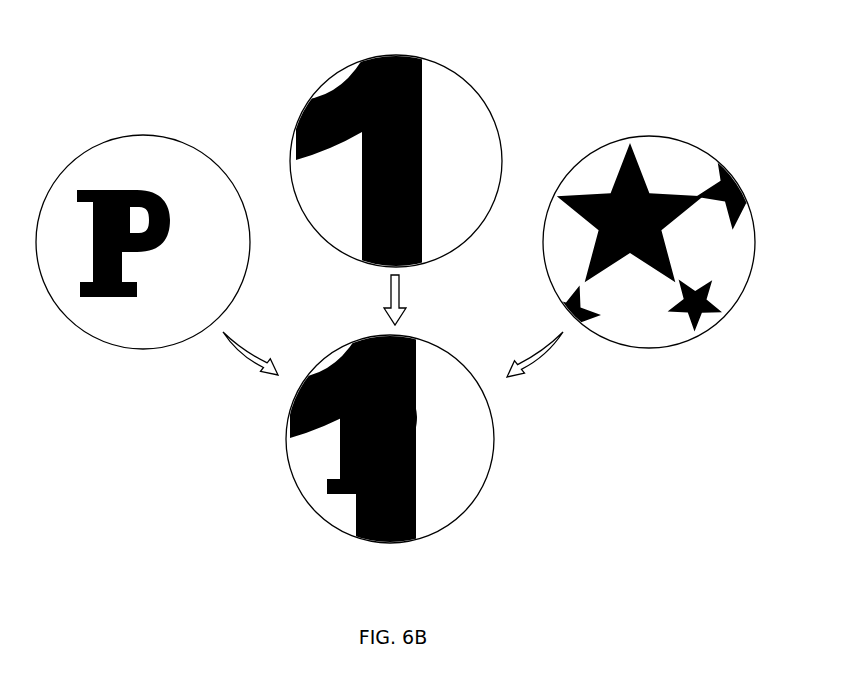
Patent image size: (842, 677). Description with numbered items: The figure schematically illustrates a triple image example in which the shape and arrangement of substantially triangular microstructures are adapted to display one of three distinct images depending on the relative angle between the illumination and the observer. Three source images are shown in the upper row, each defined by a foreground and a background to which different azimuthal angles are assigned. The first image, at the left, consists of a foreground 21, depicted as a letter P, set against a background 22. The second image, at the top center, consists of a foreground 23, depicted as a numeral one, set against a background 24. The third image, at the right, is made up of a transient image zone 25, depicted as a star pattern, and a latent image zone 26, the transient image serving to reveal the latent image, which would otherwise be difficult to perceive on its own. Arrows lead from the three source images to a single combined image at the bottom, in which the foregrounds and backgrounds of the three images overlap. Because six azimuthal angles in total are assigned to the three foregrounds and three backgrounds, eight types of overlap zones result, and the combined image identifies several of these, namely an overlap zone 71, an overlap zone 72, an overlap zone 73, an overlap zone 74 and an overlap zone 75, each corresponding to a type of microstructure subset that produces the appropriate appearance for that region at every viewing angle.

The foreground of first image 21 is at (130, 188).
The background of first image 22 is at (177, 283).
The foreground of second image 23 is at (399, 53).
The background of second image 24 is at (444, 191).
The transient image zone 25 is at (610, 183).
The latent image zone 26 is at (708, 248).
The overlap zone 71 is at (477, 508).
The overlap zone 72 is at (457, 462).
The overlap zone 73 is at (408, 345).
The overlap zone 74 is at (343, 452).
The overlap zone 75 is at (415, 452).